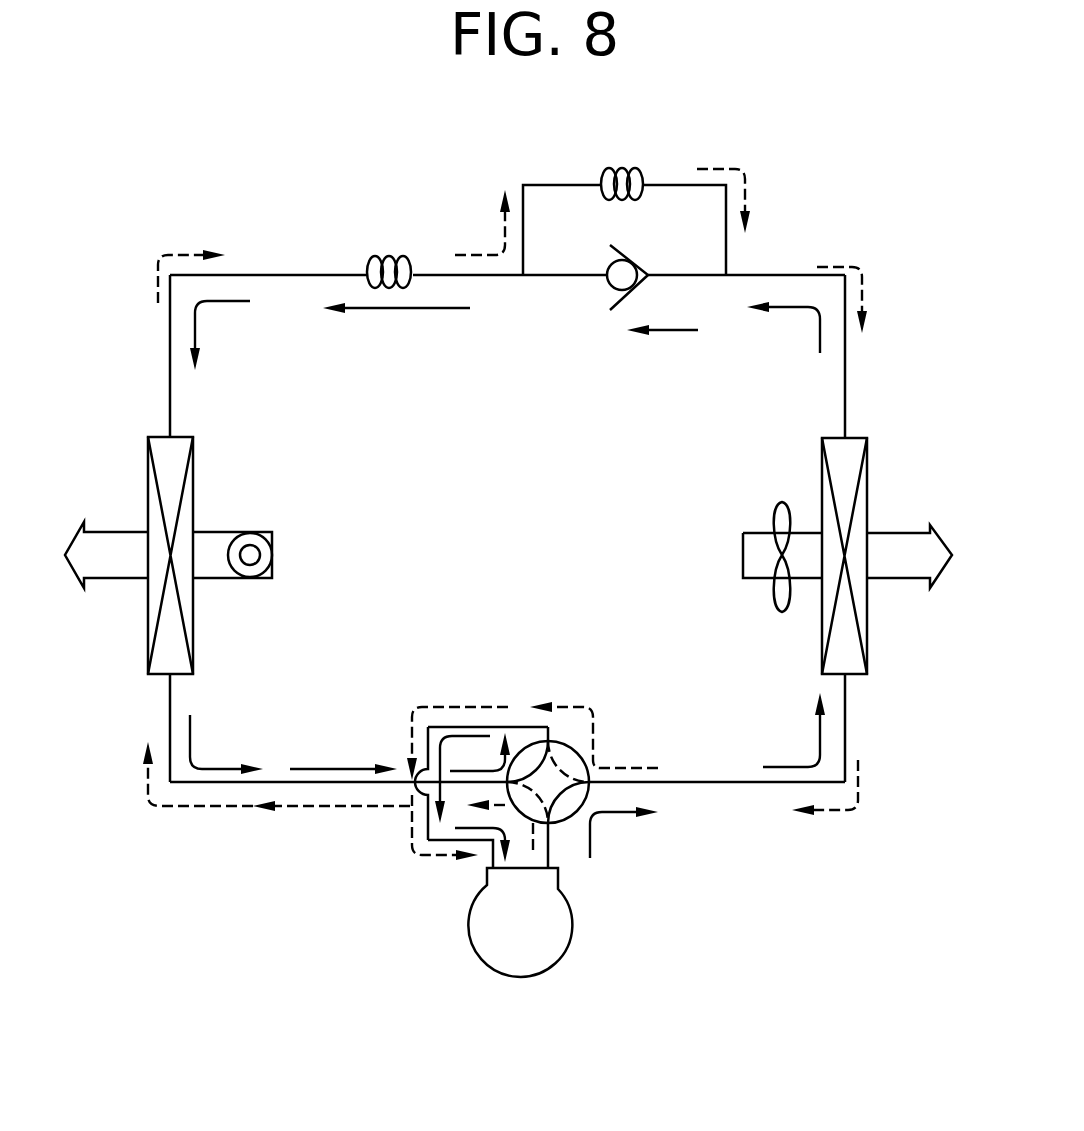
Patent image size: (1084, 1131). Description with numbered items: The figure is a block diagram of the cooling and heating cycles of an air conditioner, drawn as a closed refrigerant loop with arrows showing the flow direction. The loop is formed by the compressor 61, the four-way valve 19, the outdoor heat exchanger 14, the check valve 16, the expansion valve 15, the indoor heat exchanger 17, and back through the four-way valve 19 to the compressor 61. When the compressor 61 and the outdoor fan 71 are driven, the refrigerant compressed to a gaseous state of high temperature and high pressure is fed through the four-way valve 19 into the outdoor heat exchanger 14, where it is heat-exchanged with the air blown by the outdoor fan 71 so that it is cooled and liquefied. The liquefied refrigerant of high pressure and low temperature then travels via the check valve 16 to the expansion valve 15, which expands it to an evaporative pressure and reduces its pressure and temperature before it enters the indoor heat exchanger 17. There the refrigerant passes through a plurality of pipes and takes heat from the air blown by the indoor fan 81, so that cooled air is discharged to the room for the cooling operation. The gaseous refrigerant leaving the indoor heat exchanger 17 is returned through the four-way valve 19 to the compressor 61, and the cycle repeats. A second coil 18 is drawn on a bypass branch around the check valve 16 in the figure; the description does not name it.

The outdoor heat exchanger 14 is at (867, 485).
The expansion valve 15 is at (393, 255).
The check valve 16 is at (618, 282).
The indoor heat exchanger 17 is at (193, 483).
The expansion valve (capillary) 18 is at (632, 168).
The four-way valve 19 is at (575, 748).
The compressor 61 is at (557, 915).
The outdoor fan 71 is at (780, 500).
The indoor fan 81 is at (272, 542).